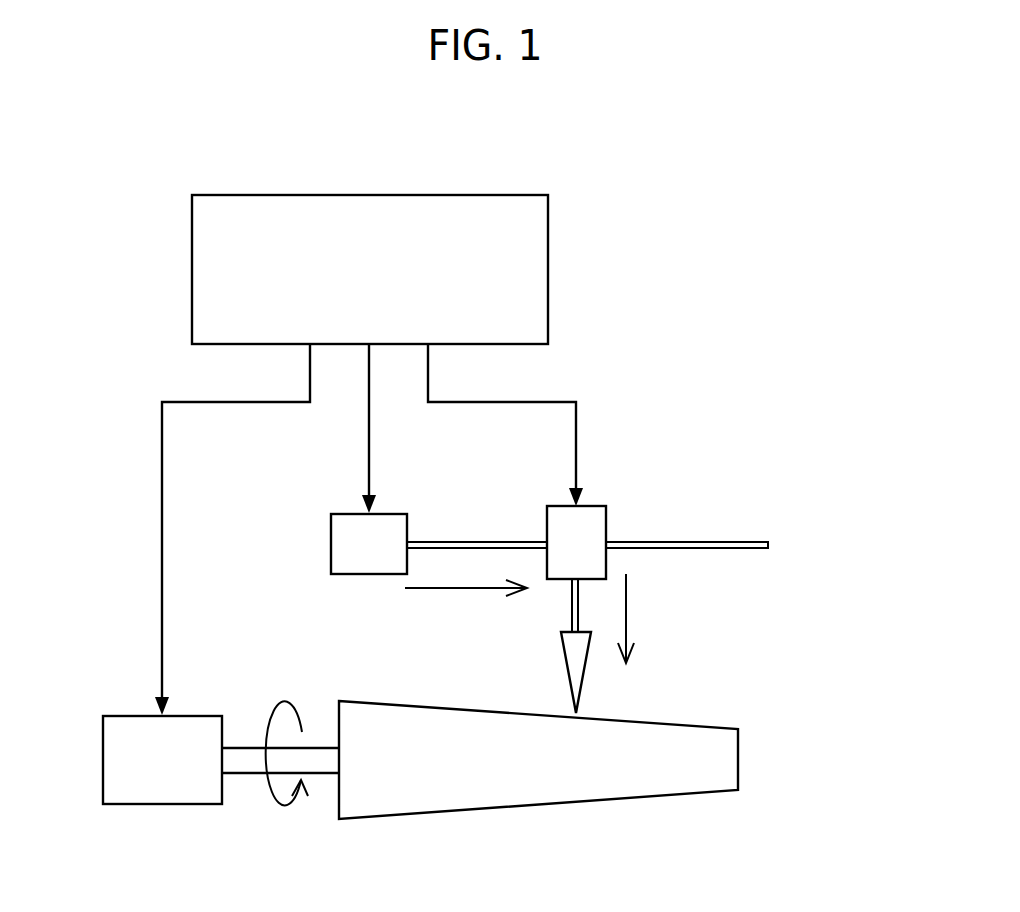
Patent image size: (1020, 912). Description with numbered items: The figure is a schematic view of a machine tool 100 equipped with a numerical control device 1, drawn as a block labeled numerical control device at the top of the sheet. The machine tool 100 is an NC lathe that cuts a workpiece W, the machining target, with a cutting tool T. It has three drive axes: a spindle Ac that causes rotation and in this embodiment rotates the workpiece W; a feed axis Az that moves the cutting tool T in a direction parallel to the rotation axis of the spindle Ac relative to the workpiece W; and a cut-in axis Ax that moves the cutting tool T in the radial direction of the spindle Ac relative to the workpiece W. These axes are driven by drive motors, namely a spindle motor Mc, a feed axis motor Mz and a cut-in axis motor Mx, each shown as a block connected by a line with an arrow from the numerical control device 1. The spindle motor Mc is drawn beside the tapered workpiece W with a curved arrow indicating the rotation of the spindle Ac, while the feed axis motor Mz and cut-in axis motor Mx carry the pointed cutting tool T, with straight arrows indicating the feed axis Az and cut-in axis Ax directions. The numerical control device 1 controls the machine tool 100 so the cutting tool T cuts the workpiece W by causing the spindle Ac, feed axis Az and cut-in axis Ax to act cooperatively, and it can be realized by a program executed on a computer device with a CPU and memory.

The numerical control device 1 is at (411, 195).
The machine tool 100 is at (669, 170).
The feed axis motor Mz is at (369, 544).
The cut-in axis motor Mx is at (576, 542).
The spindle motor Mc is at (162, 760).
The feed axis Az is at (466, 602).
The cut-in axis Ax is at (642, 618).
The spindle Ac is at (287, 773).
The workpiece W is at (427, 707).
The cutting tool T is at (568, 670).